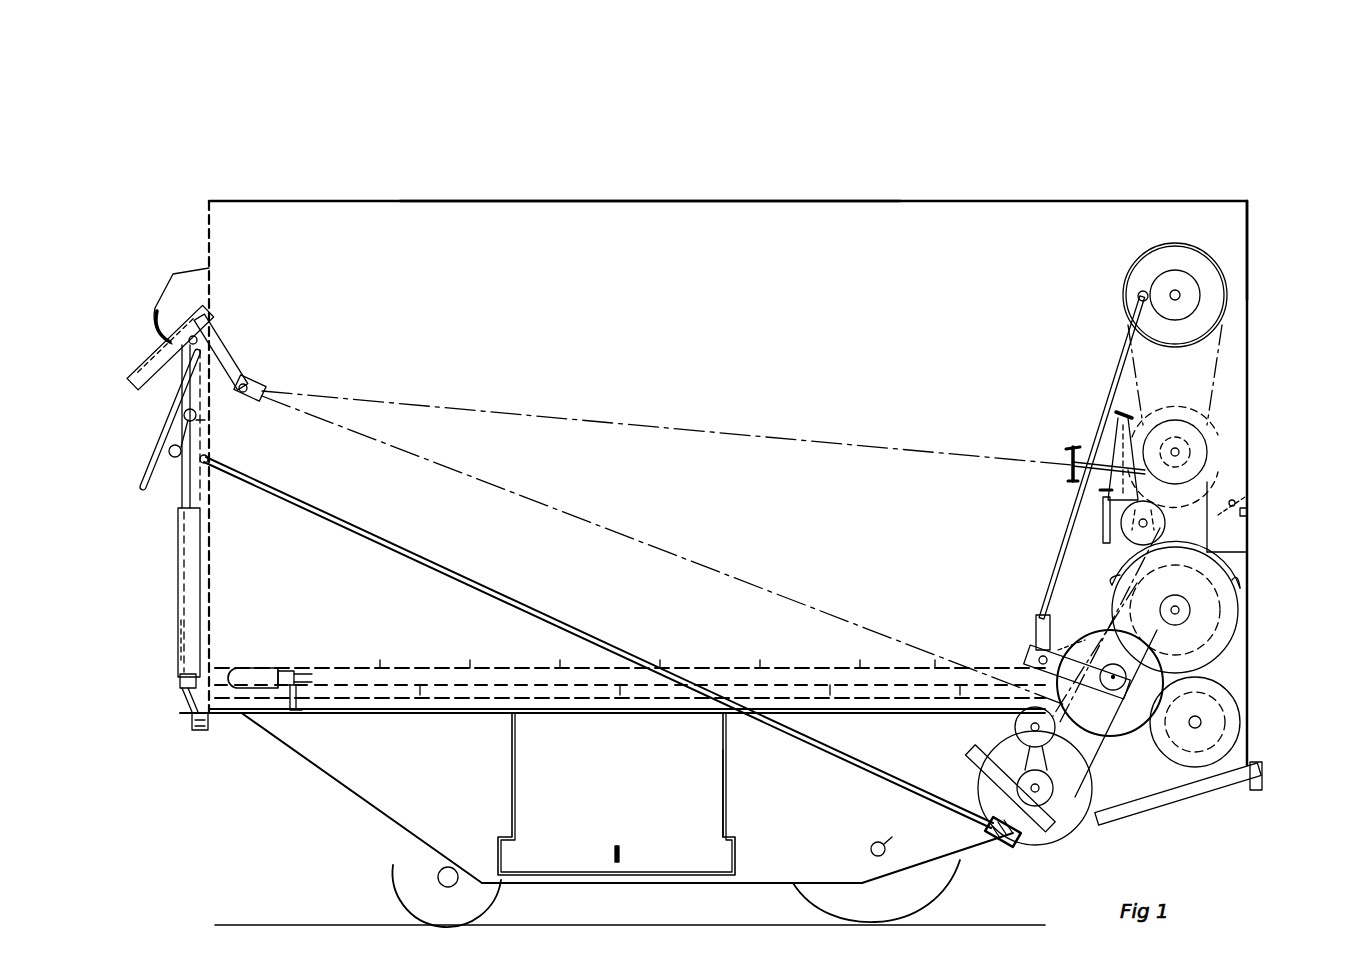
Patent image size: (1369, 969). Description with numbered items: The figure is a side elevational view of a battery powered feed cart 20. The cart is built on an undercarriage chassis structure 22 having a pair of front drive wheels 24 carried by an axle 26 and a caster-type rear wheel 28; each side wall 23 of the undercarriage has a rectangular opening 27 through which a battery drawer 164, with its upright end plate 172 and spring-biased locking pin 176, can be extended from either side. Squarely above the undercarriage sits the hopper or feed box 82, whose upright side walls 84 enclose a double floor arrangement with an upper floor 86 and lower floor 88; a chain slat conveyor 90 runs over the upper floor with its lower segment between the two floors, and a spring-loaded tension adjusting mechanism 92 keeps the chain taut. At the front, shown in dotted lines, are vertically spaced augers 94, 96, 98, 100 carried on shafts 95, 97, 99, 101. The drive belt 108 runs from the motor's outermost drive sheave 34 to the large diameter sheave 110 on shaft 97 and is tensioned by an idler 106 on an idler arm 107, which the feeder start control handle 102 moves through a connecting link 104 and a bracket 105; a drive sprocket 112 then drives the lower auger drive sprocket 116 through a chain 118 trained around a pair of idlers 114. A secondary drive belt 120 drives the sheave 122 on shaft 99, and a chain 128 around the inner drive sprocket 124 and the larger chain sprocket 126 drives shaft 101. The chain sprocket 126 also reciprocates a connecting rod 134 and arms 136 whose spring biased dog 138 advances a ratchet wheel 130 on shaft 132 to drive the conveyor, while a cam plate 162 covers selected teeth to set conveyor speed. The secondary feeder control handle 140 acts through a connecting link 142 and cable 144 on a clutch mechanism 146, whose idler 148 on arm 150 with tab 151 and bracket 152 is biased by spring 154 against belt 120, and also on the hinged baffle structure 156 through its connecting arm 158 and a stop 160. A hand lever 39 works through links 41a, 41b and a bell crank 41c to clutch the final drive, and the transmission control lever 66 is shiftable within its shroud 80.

The battery powered feed cart 20 is at (1322, 180).
The undercarriage chassis structure 22 is at (300, 788).
The side wall 23 is at (556, 834).
The front drive wheel 24 is at (935, 898).
The axle 26 is at (894, 841).
The rectangular opening 27 is at (735, 822).
The rear wheel 28 is at (405, 865).
The drive sheave 34 is at (1062, 846).
The hand lever 39 is at (158, 458).
The link 41a is at (180, 632).
The link 41b is at (236, 722).
The bell crank 41c is at (178, 690).
The control lever 66 is at (180, 498).
The shroud 80 is at (180, 585).
The hopper or feed box 82 is at (616, 188).
The side wall 84 is at (650, 282).
The upper floor 86 is at (391, 706).
The lower floor 88 is at (390, 666).
The chain slat conveyor 90 is at (470, 662).
The tension adjusting mechanism 92 is at (270, 667).
The lowermost auger 94 is at (1262, 774).
The shaft 95 is at (1198, 731).
The auger 96 is at (1240, 580).
The shaft 97 is at (1196, 624).
The auger 98 is at (1215, 412).
The shaft 99 is at (1190, 454).
The uppermost auger 100 is at (1215, 262).
The shaft 101 is at (1181, 296).
The feeder start control handle 102 is at (178, 440).
The connecting link 104 is at (398, 541).
The clevis bracket 105 is at (1000, 842).
The idler 106 is at (1028, 727).
The idler arm 107 is at (975, 772).
The drive belt 108 is at (1110, 816).
The large diameter sheave 110 is at (1206, 596).
The drive sprocket 112 is at (1232, 620).
The idler 114 is at (1235, 556).
The lower auger drive sprocket 116 is at (1216, 722).
The chain 118 is at (1240, 698).
The secondary drive belt 120 is at (1245, 536).
The sheave 122 is at (1200, 446).
The inner drive sprocket 124 is at (1163, 434).
The chain sprocket 126 is at (1184, 246).
The chain 128 is at (1228, 332).
The ratchet wheel 130 is at (1102, 628).
The shaft 132 is at (1106, 662).
The connecting rod 134 is at (1124, 348).
The arms 136 is at (1030, 650).
The spring biased dog 138 is at (1040, 612).
The secondary feeder control handle 140 is at (150, 358).
The connecting link 142 is at (405, 395).
The cable 144 is at (488, 486).
The clutch mechanism 146 is at (1085, 431).
The idler 148 is at (1128, 538).
The arm 150 is at (1120, 413).
The tab 151 is at (1240, 498).
The arm 152 is at (1146, 420).
The spring 154 is at (1104, 494).
The hinged baffle structure 156 is at (1252, 515).
The connecting arm 158 is at (1070, 462).
The stop 160 is at (1068, 480).
The cam plate 162 is at (1100, 703).
The battery drawer 164 is at (508, 880).
The end plate 172 is at (616, 794).
The locking pin 176 is at (620, 856).